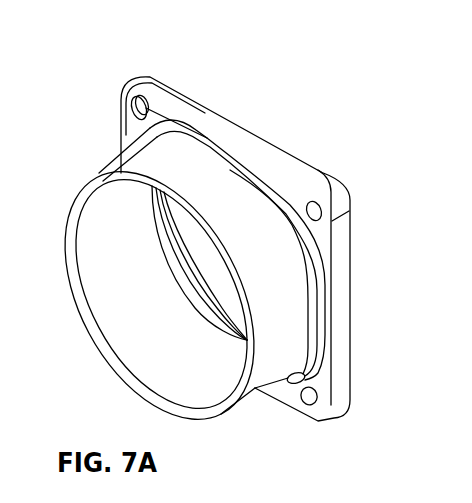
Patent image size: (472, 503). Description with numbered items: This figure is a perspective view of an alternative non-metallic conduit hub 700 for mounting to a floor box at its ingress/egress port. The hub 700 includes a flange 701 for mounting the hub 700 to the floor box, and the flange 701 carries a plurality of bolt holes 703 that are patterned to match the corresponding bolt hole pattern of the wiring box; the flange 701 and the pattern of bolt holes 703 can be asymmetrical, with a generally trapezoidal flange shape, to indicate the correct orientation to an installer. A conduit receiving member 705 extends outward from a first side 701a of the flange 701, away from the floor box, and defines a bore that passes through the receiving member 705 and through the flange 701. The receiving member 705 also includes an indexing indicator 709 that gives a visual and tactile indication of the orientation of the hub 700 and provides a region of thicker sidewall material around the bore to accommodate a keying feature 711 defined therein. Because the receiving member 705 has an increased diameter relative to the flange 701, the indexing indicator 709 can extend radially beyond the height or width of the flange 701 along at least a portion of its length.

The non-metallic conduit hub 700 is at (97, 74).
The flange 701 is at (349, 241).
The first side 701a is at (329, 375).
The bolt holes 703 is at (305, 193).
The conduit receiving member 705 is at (254, 406).
The indexing indicator 709 is at (162, 169).
The keying feature 711 is at (137, 198).